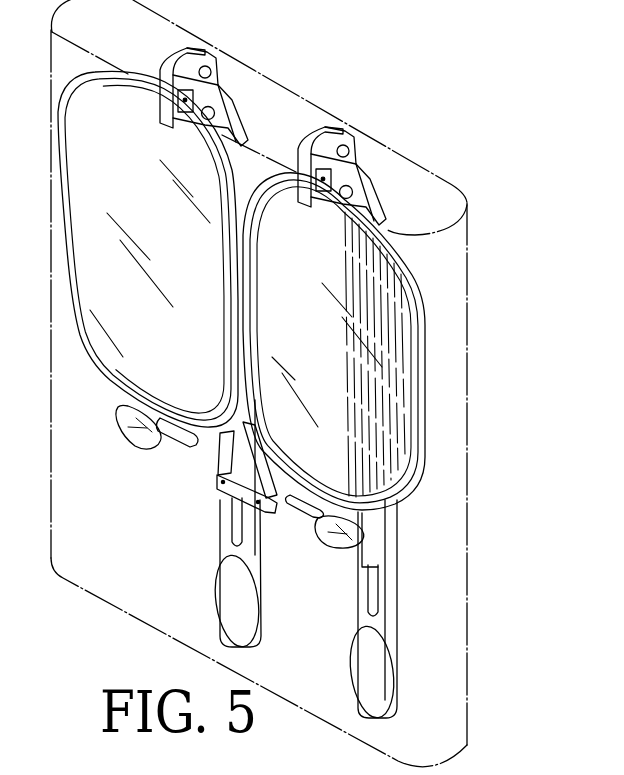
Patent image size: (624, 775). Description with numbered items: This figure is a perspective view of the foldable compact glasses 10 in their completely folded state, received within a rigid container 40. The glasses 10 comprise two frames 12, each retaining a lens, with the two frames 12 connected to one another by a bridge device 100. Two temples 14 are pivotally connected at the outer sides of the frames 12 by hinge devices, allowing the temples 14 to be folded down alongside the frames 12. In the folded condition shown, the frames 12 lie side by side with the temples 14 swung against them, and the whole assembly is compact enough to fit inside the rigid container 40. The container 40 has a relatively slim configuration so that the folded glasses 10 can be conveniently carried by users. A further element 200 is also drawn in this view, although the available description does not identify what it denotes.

The foldable compact glasses 10 is at (284, 366).
The frames 12 is at (425, 313).
The temples 14 is at (362, 592).
The rigid container 40 is at (460, 695).
The bridge device 100 is at (222, 498).
The nose pad 200 is at (133, 446).